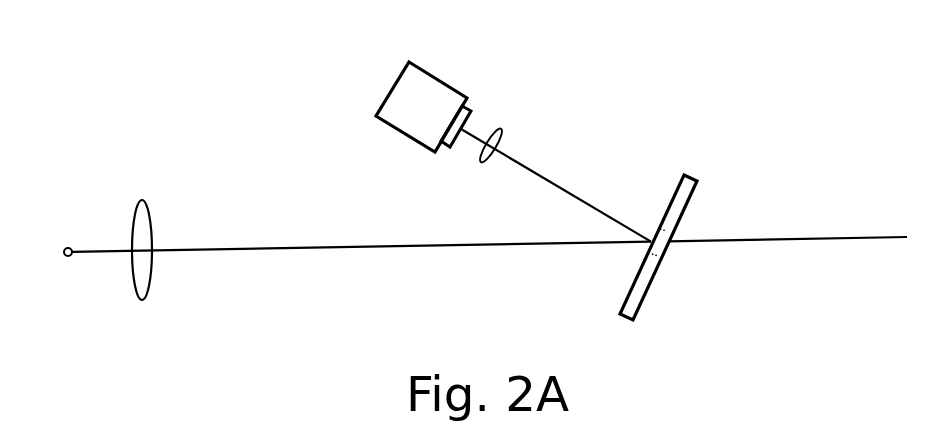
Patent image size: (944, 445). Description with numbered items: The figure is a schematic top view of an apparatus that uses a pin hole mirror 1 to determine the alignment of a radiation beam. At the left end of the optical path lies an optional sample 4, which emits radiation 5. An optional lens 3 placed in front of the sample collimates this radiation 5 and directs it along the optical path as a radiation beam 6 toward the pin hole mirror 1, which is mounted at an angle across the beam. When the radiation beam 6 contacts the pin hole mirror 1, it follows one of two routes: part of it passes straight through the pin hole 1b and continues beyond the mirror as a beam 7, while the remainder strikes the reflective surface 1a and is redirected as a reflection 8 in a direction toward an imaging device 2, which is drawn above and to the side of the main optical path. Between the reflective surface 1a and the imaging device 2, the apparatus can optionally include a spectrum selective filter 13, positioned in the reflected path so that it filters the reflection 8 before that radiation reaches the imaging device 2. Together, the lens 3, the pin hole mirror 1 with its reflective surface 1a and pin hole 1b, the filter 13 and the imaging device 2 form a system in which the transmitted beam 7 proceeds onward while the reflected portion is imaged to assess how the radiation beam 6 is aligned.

The pin hole mirror 1 is at (687, 172).
The reflective surface 1a is at (652, 233).
The pin hole 1b is at (670, 243).
The imaging device 2 is at (462, 90).
The lens 3 is at (150, 277).
The sample 4 is at (66, 246).
The radiation 5 is at (112, 253).
The radiation beam 6 is at (365, 245).
The beam 7 is at (758, 237).
The reflection 8 is at (545, 177).
The spectrum selective filter 13 is at (500, 128).